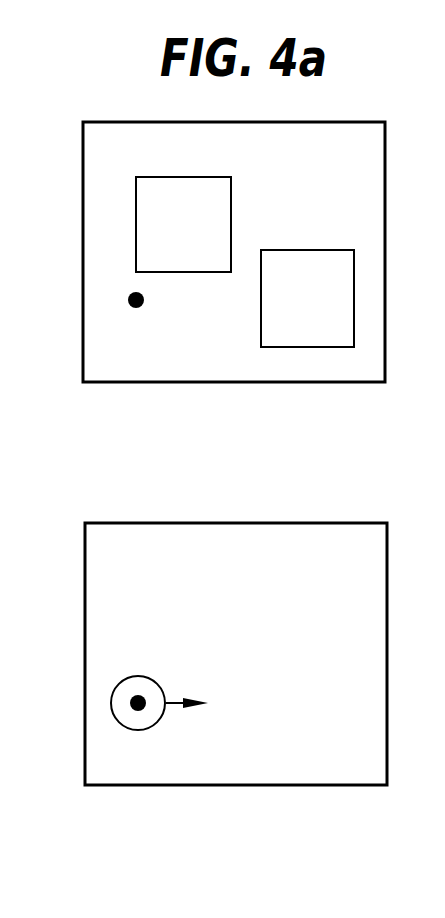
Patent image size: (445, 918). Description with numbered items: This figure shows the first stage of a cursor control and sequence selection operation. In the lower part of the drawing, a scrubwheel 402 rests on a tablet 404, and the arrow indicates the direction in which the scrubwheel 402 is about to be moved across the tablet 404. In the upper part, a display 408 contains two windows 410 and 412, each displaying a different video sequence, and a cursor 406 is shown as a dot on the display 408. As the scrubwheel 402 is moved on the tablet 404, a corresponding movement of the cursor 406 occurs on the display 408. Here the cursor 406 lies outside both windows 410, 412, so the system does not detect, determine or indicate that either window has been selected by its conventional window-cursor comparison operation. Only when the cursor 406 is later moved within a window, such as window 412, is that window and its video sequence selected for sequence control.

The scrubwheel 402 is at (155, 678).
The tablet 404 is at (317, 785).
The cursor 406 is at (142, 306).
The display 408 is at (303, 382).
The window 410 is at (215, 176).
The window 412 is at (323, 249).